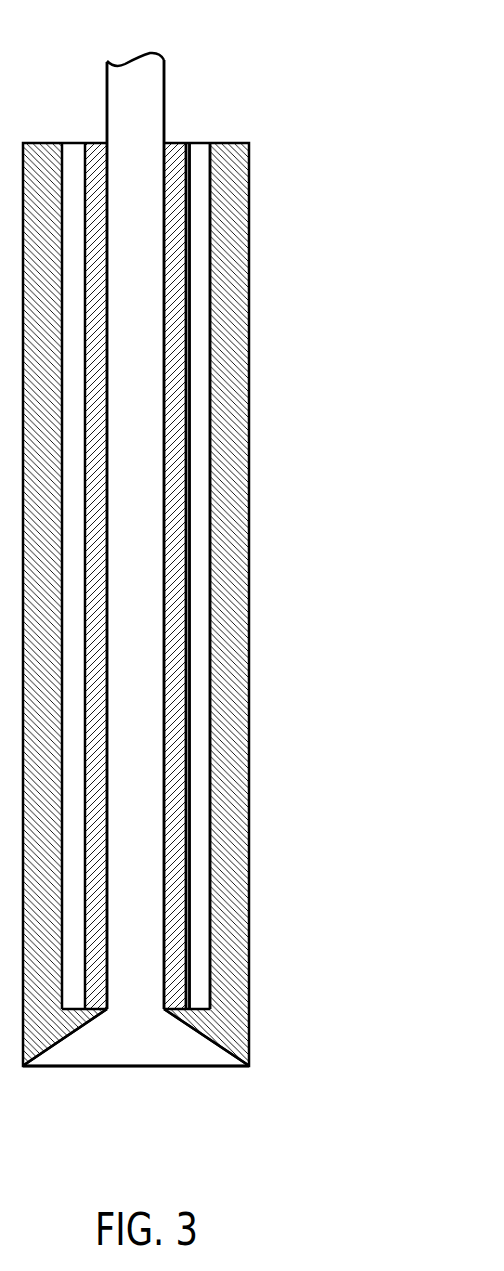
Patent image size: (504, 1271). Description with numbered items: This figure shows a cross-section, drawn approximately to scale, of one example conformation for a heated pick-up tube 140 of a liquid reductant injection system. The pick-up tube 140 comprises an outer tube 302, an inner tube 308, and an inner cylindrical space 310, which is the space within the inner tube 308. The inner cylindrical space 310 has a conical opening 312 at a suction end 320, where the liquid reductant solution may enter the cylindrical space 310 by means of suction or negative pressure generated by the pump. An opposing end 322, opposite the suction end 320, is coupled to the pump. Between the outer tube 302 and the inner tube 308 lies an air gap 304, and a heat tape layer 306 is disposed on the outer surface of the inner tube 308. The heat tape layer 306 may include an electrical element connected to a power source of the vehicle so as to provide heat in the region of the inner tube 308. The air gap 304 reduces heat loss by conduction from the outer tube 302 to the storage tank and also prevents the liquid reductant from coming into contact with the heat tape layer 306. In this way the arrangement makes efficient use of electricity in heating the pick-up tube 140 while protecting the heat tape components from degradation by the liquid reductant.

The pick-up tube 140 is at (358, 614).
The outer tube 302 is at (228, 572).
The air gap 304 is at (203, 663).
The heat tape layer 306 is at (190, 762).
The inner tube 308 is at (170, 863).
The inner cylindrical space 310 is at (163, 965).
The conical opening 312 is at (155, 1066).
The suction end 320 is at (207, 1093).
The opposing end 322 is at (122, 36).